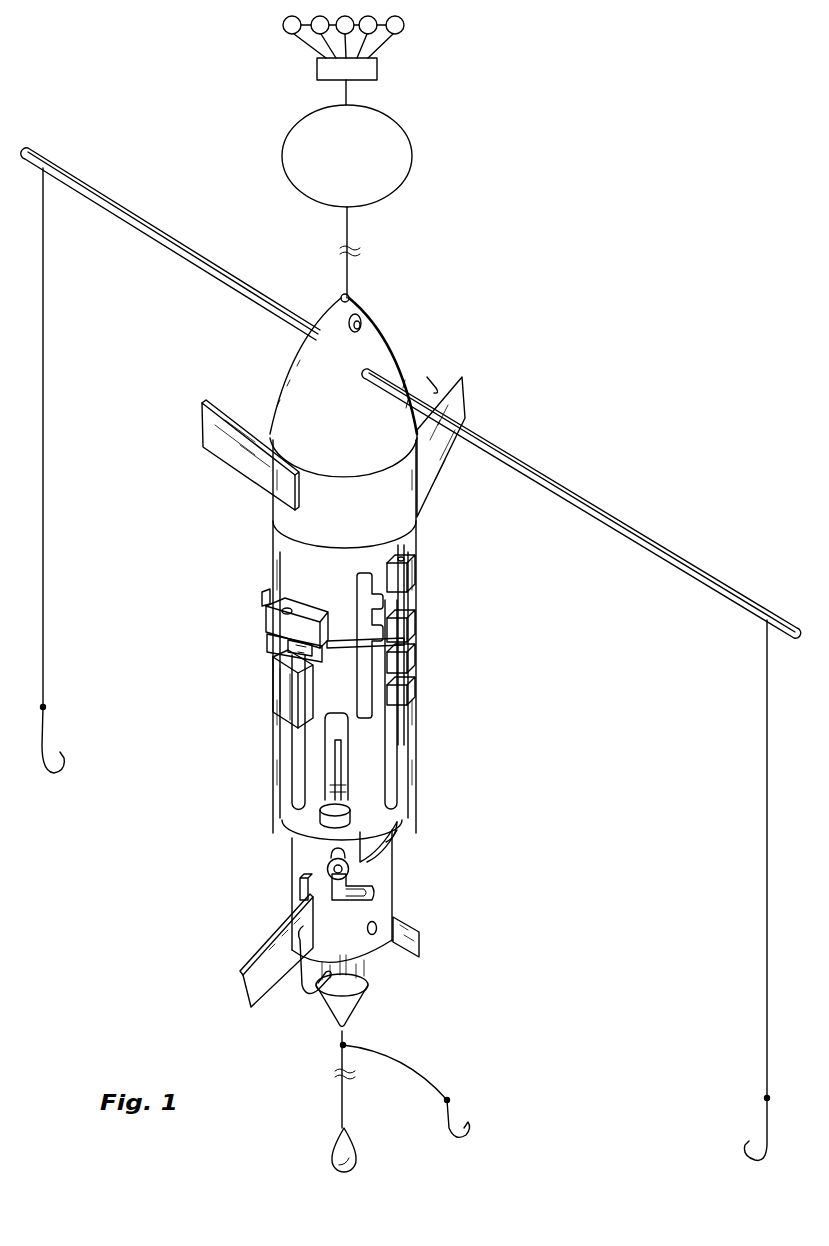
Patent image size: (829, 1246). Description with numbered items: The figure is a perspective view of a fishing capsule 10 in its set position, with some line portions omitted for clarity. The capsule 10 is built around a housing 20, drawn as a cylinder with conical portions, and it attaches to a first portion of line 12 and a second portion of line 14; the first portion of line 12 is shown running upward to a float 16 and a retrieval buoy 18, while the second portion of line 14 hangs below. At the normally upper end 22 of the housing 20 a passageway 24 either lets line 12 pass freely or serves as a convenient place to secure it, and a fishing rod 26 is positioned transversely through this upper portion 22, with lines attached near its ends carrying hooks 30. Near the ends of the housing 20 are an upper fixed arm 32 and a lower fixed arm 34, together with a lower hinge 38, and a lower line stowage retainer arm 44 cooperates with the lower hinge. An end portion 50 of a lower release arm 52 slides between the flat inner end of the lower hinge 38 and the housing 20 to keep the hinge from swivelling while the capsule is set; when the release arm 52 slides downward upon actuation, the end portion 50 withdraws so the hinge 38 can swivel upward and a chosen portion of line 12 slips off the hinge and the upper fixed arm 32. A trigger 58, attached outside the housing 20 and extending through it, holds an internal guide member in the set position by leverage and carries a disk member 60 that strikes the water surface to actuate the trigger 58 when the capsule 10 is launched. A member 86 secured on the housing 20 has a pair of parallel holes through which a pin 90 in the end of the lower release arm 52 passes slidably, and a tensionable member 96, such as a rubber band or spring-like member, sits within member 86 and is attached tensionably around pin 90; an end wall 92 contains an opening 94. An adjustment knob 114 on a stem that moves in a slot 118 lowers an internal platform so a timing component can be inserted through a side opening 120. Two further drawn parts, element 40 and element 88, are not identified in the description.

The fishing capsule 10 is at (482, 401).
The first portion of line 12 is at (410, 373).
The second portion of line 14 is at (343, 1094).
The float 16 is at (412, 138).
The retrieval buoy 18 is at (378, 66).
The housing 20 is at (272, 541).
The first or upper end of housing 22 is at (305, 380).
The passageway 24 is at (344, 296).
The fishing rod 26 is at (585, 510).
The hook 30 is at (47, 750).
The upper fixed arm 32 is at (205, 418).
The lower fixed arm 34 is at (419, 947).
The lower hinge 38 is at (248, 975).
The sinker 40 is at (358, 1150).
The lower line stowage retainer arm 44 is at (306, 999).
The end portion of lower release arm 50 is at (300, 882).
The lower release arm 52 is at (275, 732).
The trigger (first release member) 58 is at (346, 785).
The disk member 60 is at (383, 842).
The member 86 is at (292, 607).
The tab 88 is at (264, 603).
The pin 90 is at (268, 651).
The end wall 92 is at (338, 562).
The opening 94 is at (300, 670).
The tensionable member 96 is at (408, 618).
The adjustment knob 114 is at (330, 858).
The slot 118 is at (327, 869).
The side opening 120 is at (400, 824).